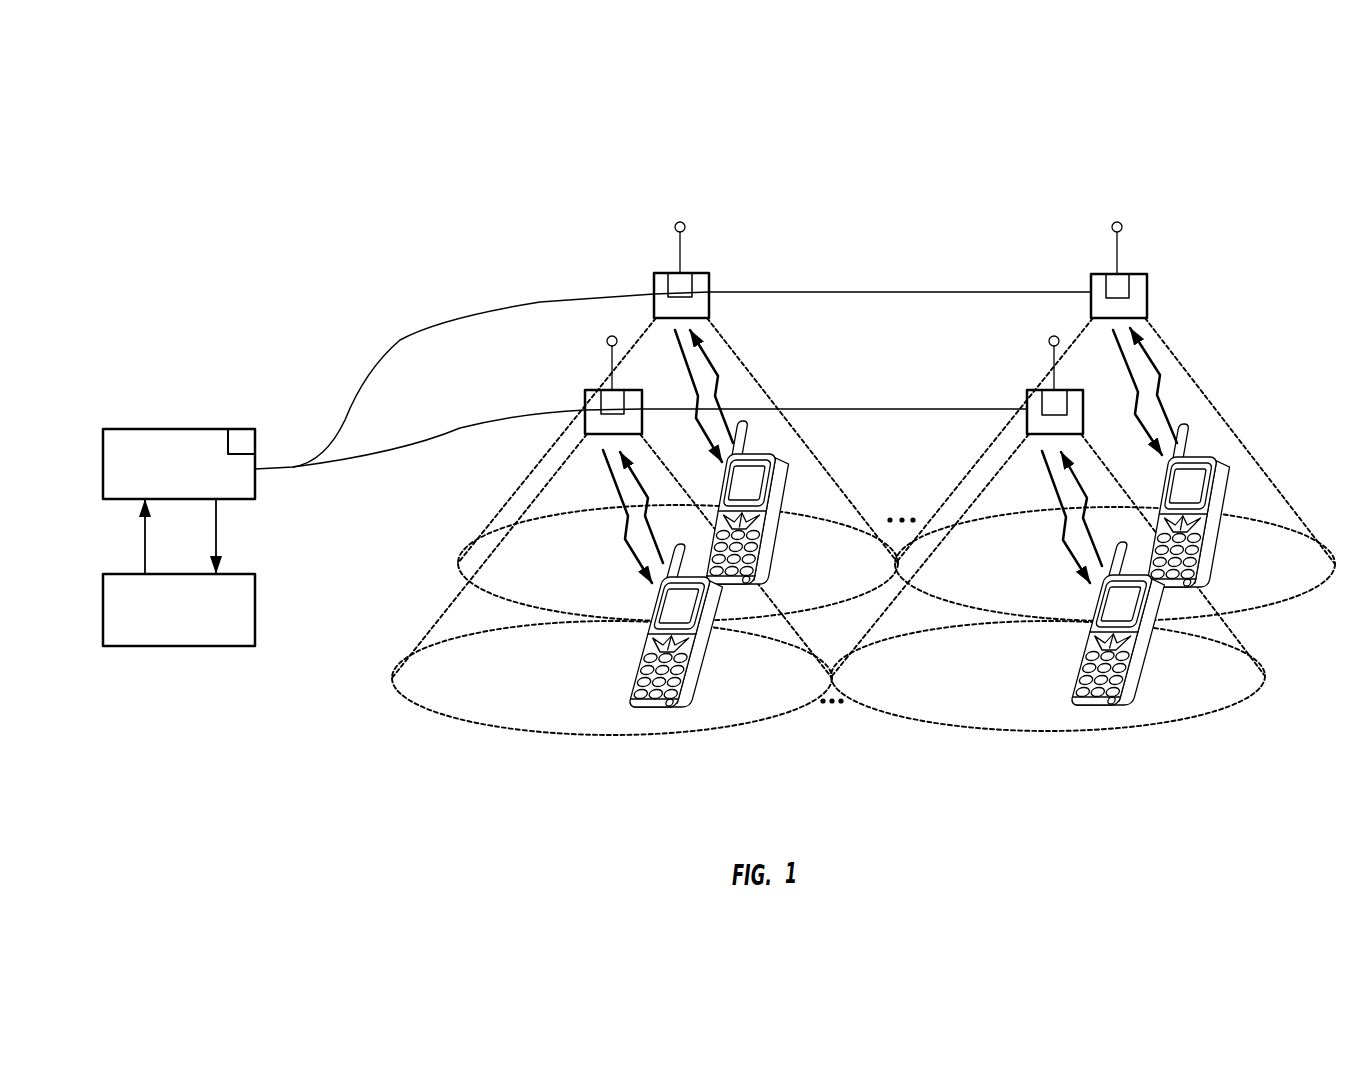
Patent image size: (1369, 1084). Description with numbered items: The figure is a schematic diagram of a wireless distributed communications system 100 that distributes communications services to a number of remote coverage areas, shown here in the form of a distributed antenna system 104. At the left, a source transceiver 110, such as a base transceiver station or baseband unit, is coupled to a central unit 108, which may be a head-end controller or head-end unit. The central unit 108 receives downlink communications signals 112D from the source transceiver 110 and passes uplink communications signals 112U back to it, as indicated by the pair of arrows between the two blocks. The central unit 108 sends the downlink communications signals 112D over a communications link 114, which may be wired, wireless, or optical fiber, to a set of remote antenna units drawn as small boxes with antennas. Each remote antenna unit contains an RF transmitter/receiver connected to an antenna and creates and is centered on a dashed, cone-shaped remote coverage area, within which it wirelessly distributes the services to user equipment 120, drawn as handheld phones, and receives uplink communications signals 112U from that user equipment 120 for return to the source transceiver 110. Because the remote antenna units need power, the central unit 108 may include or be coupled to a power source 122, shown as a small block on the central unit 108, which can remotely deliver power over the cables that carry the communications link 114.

The wireless distributed communications system 100 is at (950, 210).
The distributed antenna system 104 is at (828, 245).
The central unit 108 is at (195, 479).
The source transceiver 110 is at (195, 624).
The downlink communications signals 112D is at (676, 352).
The uplink communications signals 112U is at (705, 360).
The communications link 114 is at (478, 316).
The user equipment 120 is at (778, 572).
The power source 122 is at (243, 437).